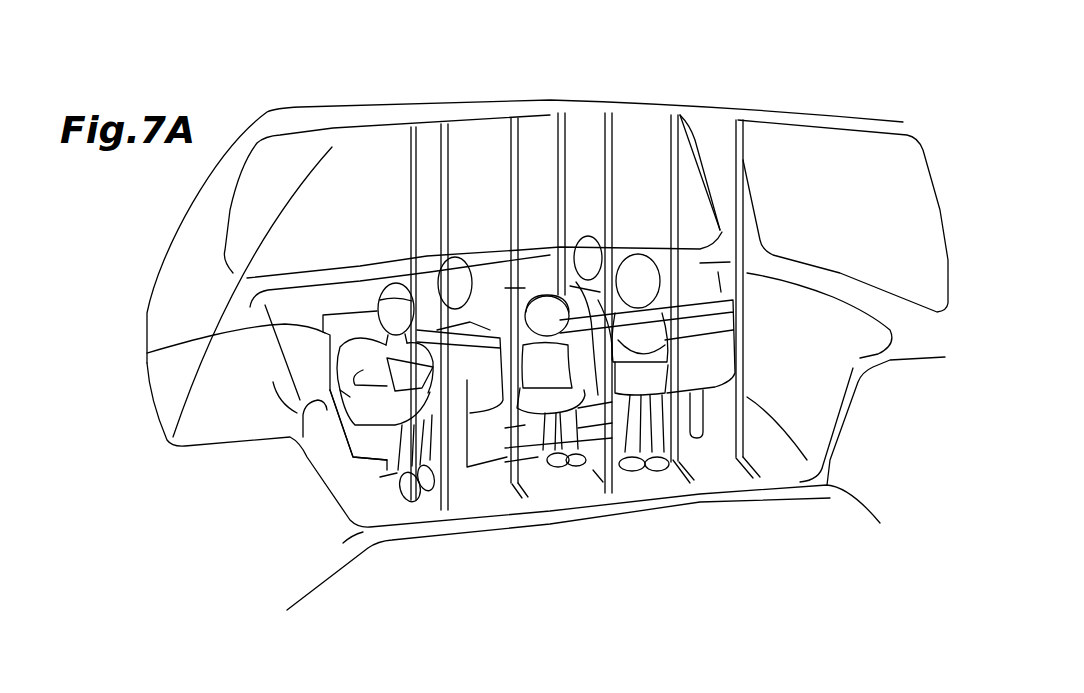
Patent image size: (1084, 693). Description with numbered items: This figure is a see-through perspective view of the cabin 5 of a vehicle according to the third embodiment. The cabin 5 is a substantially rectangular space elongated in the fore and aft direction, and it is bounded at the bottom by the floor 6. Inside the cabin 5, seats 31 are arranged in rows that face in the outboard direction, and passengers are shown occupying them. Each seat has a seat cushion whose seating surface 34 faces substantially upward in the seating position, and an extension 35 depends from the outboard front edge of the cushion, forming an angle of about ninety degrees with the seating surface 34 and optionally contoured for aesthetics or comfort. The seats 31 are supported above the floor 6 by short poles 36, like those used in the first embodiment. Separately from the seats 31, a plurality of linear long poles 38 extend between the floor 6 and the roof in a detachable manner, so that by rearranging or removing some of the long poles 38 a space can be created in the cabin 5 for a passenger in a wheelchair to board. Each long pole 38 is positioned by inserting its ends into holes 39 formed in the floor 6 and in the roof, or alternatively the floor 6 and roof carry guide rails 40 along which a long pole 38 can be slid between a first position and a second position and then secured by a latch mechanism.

The cabin 5 is at (716, 143).
The floor 6 is at (768, 463).
The seat 31 is at (310, 372).
The seating surface 34 is at (345, 428).
The extension 35 is at (147, 353).
The short pole 36 is at (694, 412).
The long pole 38 is at (443, 133).
The hole 39 is at (695, 483).
The guide rail 40 is at (594, 469).